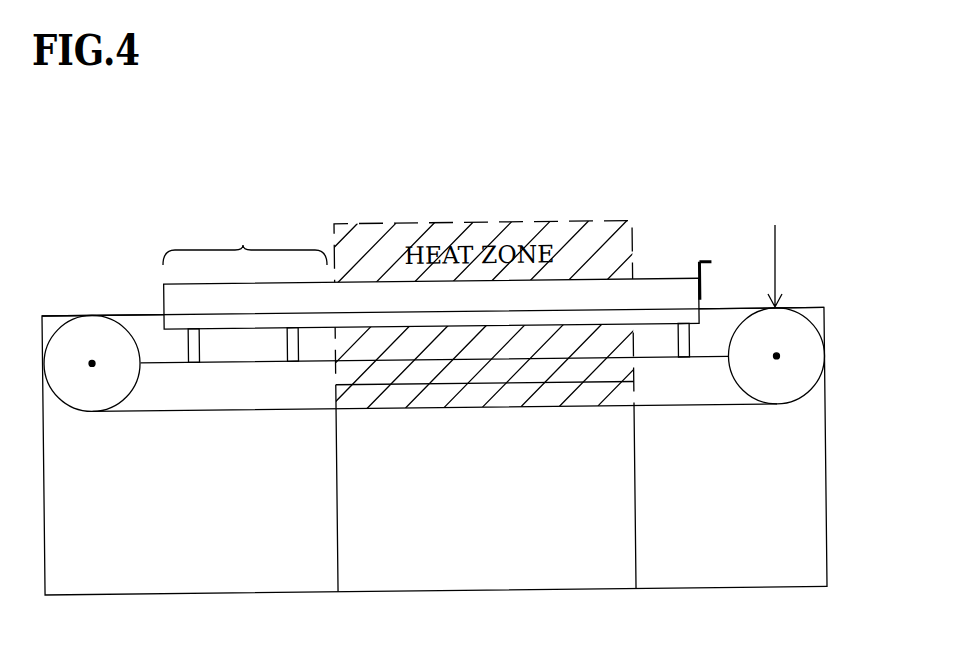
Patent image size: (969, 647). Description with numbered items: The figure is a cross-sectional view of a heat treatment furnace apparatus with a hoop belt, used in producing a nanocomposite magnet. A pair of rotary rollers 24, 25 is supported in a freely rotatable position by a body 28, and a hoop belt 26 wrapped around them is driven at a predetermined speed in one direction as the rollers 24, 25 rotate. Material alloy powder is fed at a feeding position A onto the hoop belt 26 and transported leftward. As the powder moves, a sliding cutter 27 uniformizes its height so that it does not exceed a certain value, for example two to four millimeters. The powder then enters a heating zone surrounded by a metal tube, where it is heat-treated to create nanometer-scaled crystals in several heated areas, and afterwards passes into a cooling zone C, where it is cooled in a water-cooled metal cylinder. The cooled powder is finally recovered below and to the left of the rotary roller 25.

The rotary roller 24 is at (802, 347).
The rotary roller 25 is at (90, 330).
The hoop belt 26 is at (187, 410).
The sliding cutter 27 is at (697, 267).
The body 28 is at (827, 495).
The cooling zone C is at (245, 238).
The feeding position A is at (775, 249).